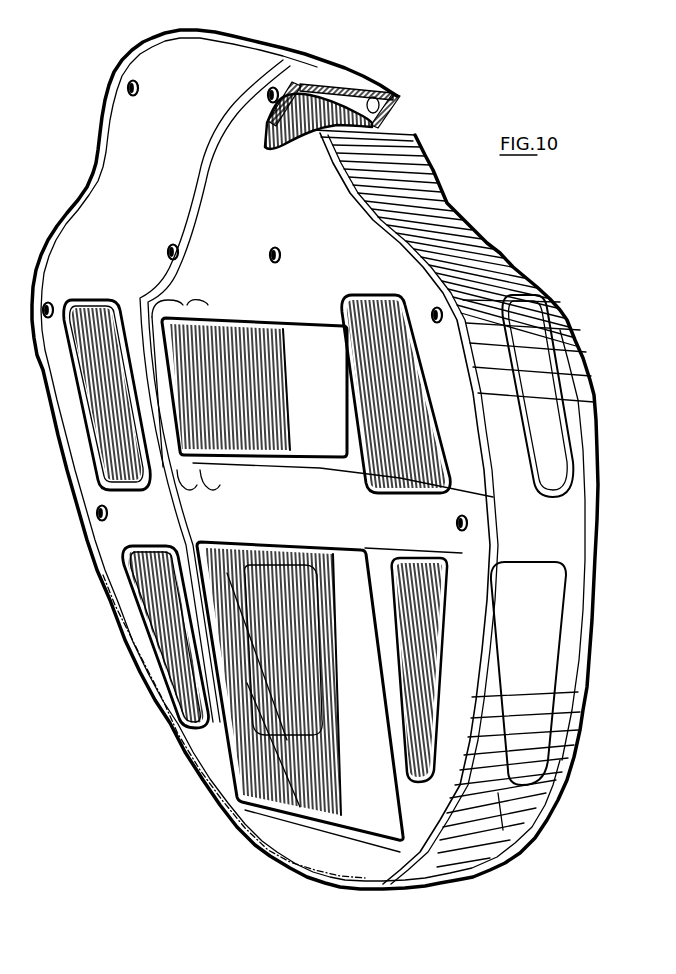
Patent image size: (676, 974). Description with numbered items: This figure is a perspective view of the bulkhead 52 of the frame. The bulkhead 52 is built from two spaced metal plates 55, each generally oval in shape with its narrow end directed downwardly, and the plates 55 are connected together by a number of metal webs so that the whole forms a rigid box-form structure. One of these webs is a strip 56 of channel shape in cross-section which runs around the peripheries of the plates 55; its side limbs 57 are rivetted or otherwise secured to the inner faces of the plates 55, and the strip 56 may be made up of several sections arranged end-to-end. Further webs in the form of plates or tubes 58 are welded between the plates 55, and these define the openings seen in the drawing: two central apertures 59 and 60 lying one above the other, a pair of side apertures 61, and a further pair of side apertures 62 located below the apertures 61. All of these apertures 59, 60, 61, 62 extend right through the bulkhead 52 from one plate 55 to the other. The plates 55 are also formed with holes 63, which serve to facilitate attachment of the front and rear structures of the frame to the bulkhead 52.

The bulkhead 52 is at (518, 263).
The metal plates 55 is at (120, 143).
The strip 56 is at (350, 78).
The side limbs 57 is at (320, 82).
The plates or tubes 58 is at (210, 437).
The central aperture 59 is at (320, 433).
The central aperture 60 is at (342, 577).
The side apertures 61 is at (72, 397).
The side apertures 62 is at (167, 630).
The holes 63 is at (173, 246).